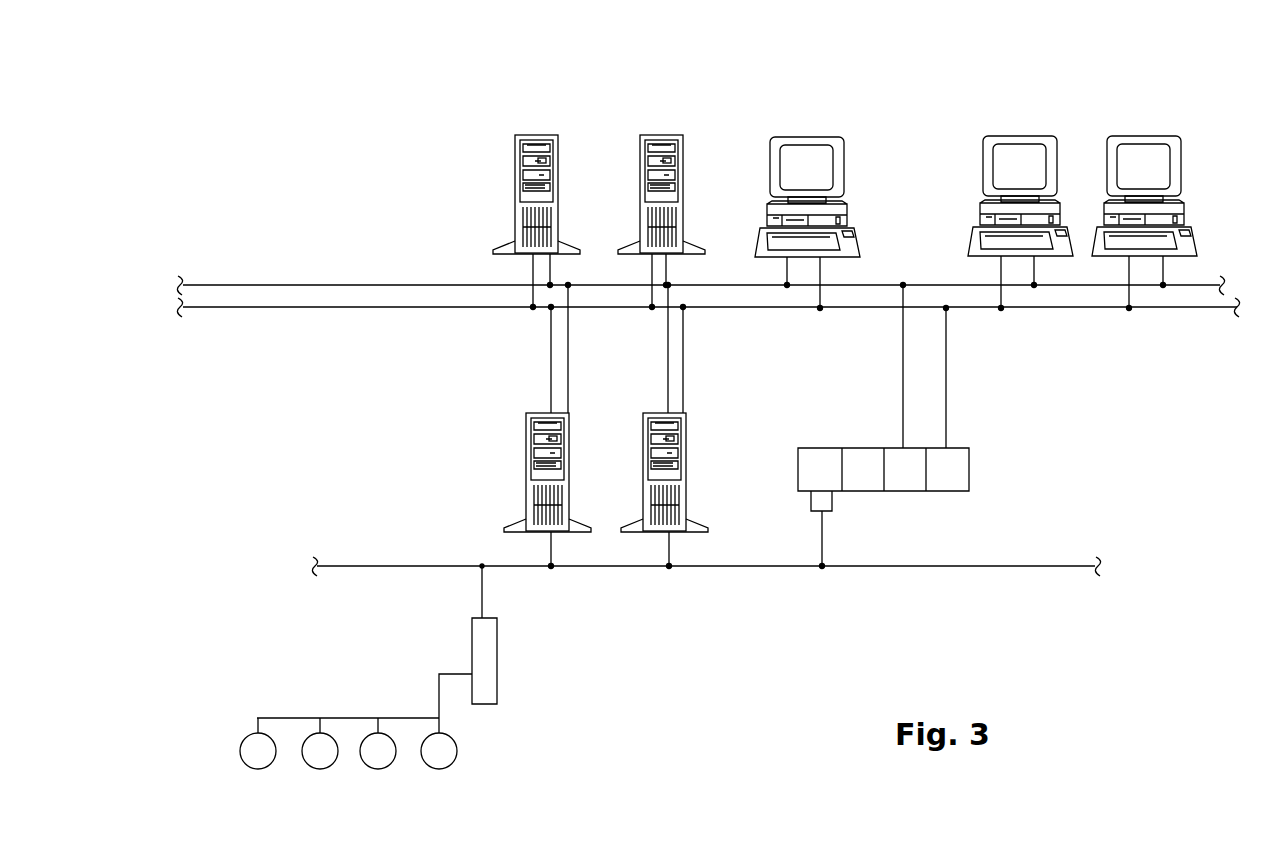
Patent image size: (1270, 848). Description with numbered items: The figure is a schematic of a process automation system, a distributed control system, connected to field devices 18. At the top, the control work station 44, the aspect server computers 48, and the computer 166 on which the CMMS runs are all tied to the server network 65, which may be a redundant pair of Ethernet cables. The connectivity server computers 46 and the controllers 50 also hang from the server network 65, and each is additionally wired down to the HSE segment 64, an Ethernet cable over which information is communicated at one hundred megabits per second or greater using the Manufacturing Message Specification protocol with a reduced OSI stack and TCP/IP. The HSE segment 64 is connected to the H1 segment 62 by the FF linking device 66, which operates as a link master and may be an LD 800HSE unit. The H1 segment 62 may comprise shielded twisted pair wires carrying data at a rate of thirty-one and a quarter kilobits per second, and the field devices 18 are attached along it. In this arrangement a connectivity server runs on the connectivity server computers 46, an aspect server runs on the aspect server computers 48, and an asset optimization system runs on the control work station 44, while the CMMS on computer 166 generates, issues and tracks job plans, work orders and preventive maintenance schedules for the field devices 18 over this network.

The field devices 18 is at (383, 782).
The control work station 44 is at (867, 156).
The connectivity server computers 46 is at (510, 452).
The aspect server computers 48 is at (645, 115).
The controllers 50 is at (831, 432).
The H1 segment 62 is at (363, 703).
The HSE segment 64 is at (790, 567).
The server network 65 is at (339, 270).
The FF linking device 66 is at (485, 666).
The computer 166 is at (1033, 124).